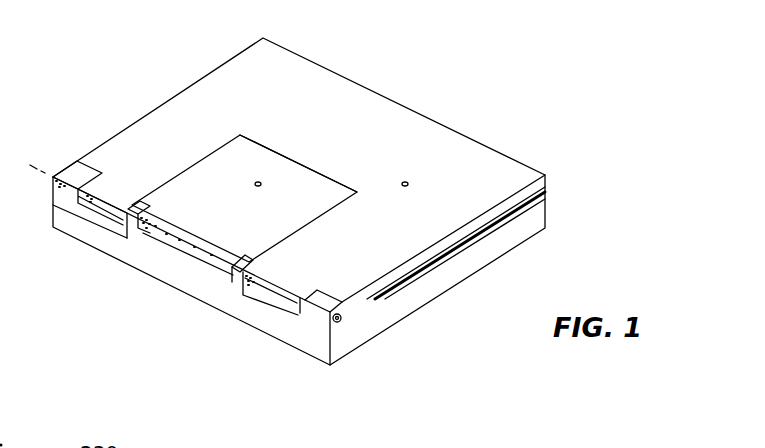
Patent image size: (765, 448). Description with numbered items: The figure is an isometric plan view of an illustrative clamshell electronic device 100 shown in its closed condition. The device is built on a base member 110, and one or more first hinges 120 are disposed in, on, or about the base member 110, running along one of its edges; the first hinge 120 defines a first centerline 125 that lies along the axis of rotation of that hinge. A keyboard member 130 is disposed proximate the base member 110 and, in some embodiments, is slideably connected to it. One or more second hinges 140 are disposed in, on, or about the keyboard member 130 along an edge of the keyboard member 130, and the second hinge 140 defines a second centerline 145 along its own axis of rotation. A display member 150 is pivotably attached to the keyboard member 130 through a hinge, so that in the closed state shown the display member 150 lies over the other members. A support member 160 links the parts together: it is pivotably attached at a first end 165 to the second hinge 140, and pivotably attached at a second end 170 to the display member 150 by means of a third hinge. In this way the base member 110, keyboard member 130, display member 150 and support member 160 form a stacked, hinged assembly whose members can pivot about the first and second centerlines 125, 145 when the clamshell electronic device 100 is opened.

The clamshell electronic device 100 is at (625, 45).
The base member 110 is at (522, 232).
The first hinge 120 is at (220, 270).
The first centerline 125 is at (156, 244).
The keyboard member 130 is at (545, 192).
The second hinge 140 is at (313, 315).
The second centerline 145 is at (327, 324).
The display member 150 is at (405, 183).
The support member 160 is at (258, 183).
The first end 165 is at (160, 233).
The second end 170 is at (320, 172).